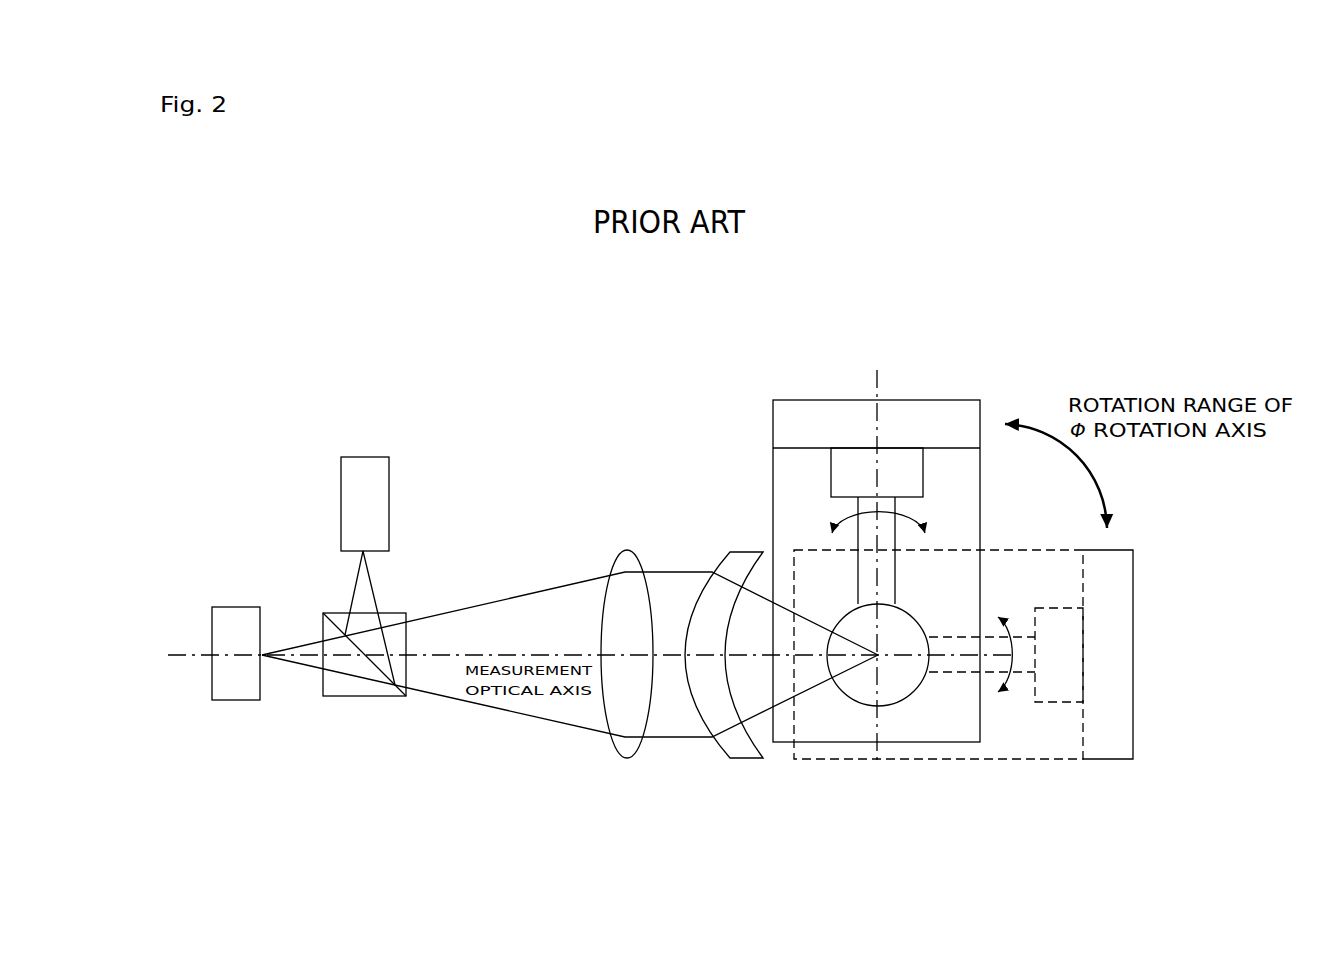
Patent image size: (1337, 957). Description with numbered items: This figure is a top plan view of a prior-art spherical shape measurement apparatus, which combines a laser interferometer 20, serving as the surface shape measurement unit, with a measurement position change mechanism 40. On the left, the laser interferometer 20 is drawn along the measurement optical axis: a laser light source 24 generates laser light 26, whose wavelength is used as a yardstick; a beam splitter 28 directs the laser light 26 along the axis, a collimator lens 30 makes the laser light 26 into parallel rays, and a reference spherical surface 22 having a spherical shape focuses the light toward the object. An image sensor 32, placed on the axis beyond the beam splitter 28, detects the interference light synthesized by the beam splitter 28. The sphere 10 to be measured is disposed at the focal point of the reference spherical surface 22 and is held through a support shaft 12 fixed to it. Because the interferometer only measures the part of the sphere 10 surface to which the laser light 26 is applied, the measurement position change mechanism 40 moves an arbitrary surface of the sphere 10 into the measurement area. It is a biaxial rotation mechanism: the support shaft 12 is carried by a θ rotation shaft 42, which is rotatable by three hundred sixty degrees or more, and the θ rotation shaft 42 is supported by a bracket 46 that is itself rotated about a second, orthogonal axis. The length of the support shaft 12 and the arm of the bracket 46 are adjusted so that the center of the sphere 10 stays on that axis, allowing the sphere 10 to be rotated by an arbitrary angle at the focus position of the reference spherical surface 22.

The sphere 10 is at (895, 680).
The support shaft 12 is at (852, 578).
The laser interferometer 20 is at (415, 372).
The reference spherical surface 22 is at (720, 748).
The laser light source 24 is at (389, 497).
The laser light 26 is at (488, 602).
The beam splitter 28 is at (342, 696).
The collimator lens 30 is at (613, 740).
The image sensor 32 is at (212, 623).
The measurement position change mechanism 40 is at (997, 295).
The θ rotation shaft 42 is at (849, 472).
The bracket 46 is at (915, 400).